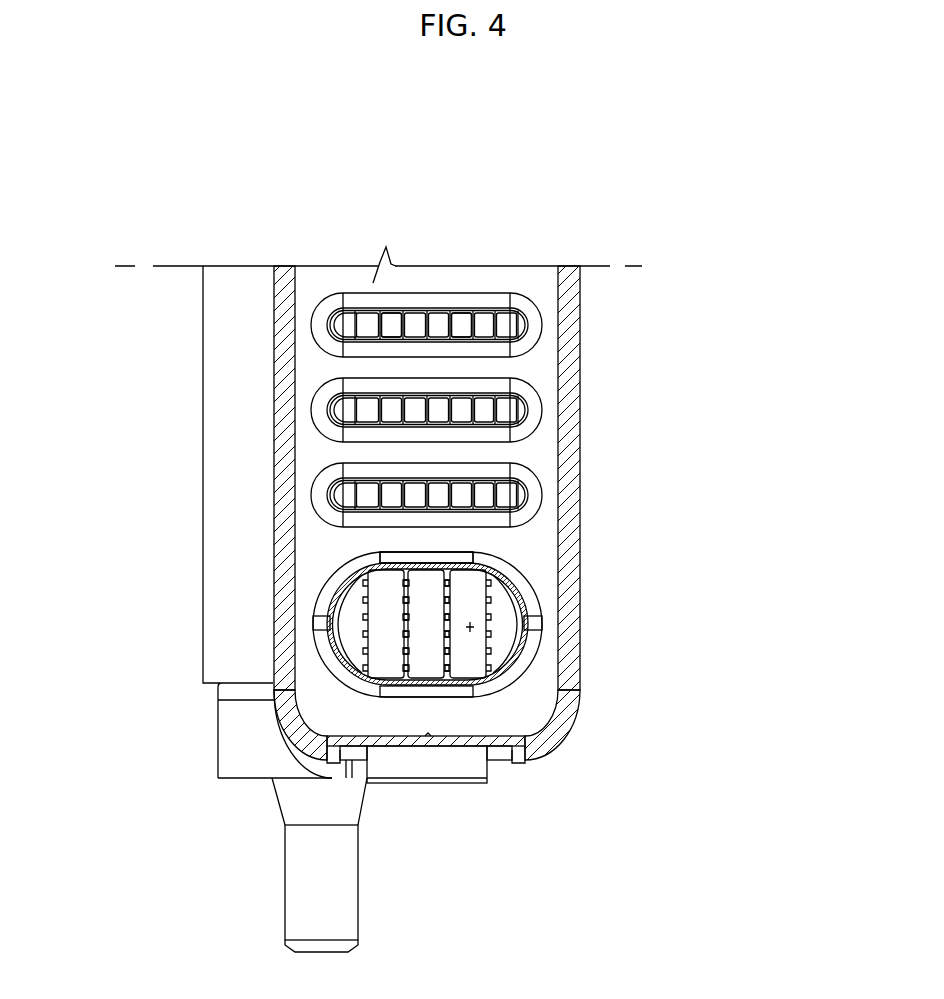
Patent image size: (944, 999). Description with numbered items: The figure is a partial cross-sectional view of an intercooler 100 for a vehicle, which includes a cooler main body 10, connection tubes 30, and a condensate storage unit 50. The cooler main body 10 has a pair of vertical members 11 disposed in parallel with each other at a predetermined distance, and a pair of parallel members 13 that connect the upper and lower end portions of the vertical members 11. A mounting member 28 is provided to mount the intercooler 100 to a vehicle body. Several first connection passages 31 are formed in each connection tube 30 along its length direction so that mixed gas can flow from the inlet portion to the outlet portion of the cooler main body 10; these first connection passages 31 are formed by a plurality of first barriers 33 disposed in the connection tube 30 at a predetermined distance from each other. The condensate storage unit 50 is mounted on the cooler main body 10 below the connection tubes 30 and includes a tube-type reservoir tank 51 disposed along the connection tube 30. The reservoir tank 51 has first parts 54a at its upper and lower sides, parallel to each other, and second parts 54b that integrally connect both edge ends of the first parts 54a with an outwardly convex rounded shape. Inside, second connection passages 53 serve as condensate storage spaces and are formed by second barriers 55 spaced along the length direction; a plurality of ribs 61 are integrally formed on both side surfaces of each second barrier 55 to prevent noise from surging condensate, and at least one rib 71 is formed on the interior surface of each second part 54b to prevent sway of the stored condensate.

The intercooler 100 is at (406, 139).
The cooler main body 10 is at (508, 514).
The vertical member 11 is at (540, 455).
The parallel member 13 is at (487, 778).
The mounting member 28 is at (227, 748).
The connection tube 30 is at (320, 392).
The first connection passage 31 is at (460, 322).
The first barrier 33 is at (408, 322).
The condensate storage unit 50 is at (371, 705).
The reservoir tank 51 is at (352, 723).
The second connection passage 53 is at (475, 632).
The first part 54a is at (423, 563).
The second part 54b is at (313, 623).
The second barrier 55 is at (407, 637).
The rib 61 is at (437, 630).
The rib 71 is at (518, 600).